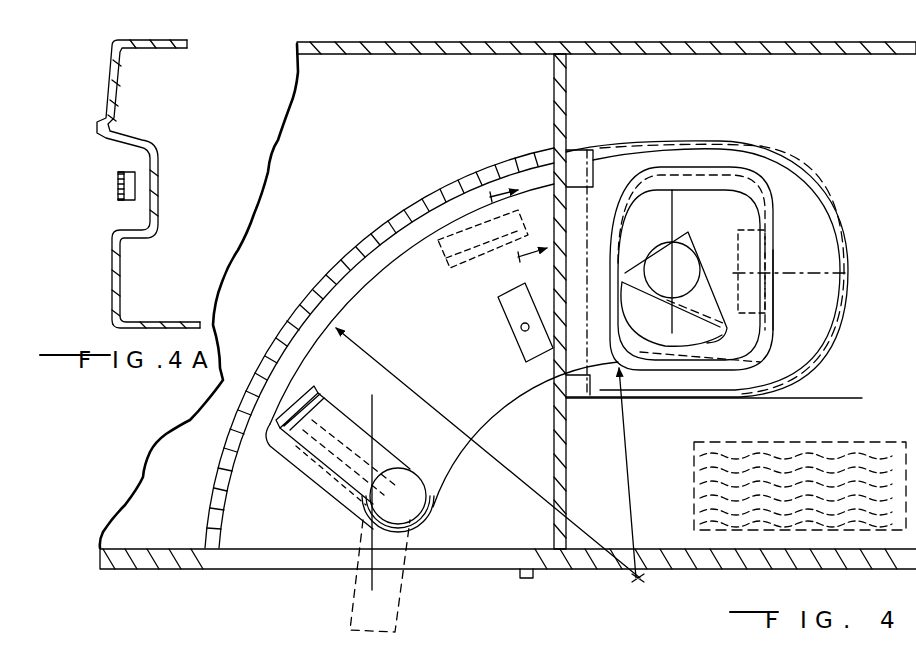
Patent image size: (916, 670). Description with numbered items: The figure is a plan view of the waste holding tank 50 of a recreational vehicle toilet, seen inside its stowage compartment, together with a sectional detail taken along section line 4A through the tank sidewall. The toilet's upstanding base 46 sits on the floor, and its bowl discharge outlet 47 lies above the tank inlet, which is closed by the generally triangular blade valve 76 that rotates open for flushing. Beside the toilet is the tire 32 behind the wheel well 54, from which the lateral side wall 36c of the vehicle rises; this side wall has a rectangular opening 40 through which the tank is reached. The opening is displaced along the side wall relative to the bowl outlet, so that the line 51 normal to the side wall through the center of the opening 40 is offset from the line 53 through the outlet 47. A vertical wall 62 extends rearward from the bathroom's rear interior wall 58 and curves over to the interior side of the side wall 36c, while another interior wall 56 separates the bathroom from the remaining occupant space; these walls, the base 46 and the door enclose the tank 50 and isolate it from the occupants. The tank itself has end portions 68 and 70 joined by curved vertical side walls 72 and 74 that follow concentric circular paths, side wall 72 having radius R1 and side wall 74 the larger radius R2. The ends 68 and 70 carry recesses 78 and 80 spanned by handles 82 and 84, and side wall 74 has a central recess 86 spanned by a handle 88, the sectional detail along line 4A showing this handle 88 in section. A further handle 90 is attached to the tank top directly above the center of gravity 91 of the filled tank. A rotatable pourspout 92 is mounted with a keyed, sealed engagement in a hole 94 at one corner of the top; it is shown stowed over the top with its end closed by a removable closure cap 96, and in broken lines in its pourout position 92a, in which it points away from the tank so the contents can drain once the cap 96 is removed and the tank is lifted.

In FIG. 4, the tire 32 is at (848, 540).
In FIG. 4, the lateral side wall 36c is at (640, 572).
In FIG. 4, the rectangular opening 40 is at (518, 575).
In FIG. 4, the upstanding base 46 is at (778, 152).
In FIG. 4, the toilet bowl discharge outlet 47 is at (678, 250).
In FIG. 4, the holding tank 50 is at (452, 470).
In FIG. 4, the line normal to sidewall through center of opening 51 is at (378, 400).
In FIG. 4, the line through toilet bowl discharge outlet 53 is at (672, 222).
In FIG. 4, the wheel well 54 is at (828, 398).
In FIG. 4, the interior wall 56 is at (730, 56).
In FIG. 4, the interior wall 58 is at (566, 470).
In FIG. 4, the vertical wall 62 is at (364, 247).
In FIG. 4, the tank end portion 68 is at (778, 322).
In FIG. 4, the tank end portion 70 is at (288, 448).
In FIG. 4, the curved vertical side wall 72 is at (506, 403).
In FIG. 4A, the curved vertical side wall 74 is at (122, 90).
In FIG. 4, the curved vertical side wall 74 is at (371, 286).
In FIG. 4, the blade valve 76 is at (730, 324).
In FIG. 4, the recess 78 is at (848, 273).
In FIG. 4, the recess 80 is at (286, 490).
In FIG. 4, the handle 82 is at (778, 236).
In FIG. 4, the handle 84 is at (322, 485).
In FIG. 4A, the recess 86 is at (158, 190).
In FIG. 4, the recess 86 is at (470, 268).
In FIG. 4A, the handle 88 is at (116, 192).
In FIG. 4, the handle 88 is at (446, 260).
In FIG. 4, the handle 90 is at (512, 328).
In FIG. 4, the center of gravity 91 is at (522, 332).
In FIG. 4, the rotatable pourspout 92 is at (378, 450).
In FIG. 4, the pourout position of pourspout 92a is at (402, 602).
In FIG. 4, the hole 94 is at (430, 505).
In FIG. 4, the removable closure cap 96 is at (318, 400).
In FIG. 4, the section line 4a—4a 4A is at (518, 218).
In FIG. 4, the radius of curvature of sidewall 72 R1 is at (652, 428).
In FIG. 4, the radius of curvature of sidewall 74 R2 is at (384, 364).